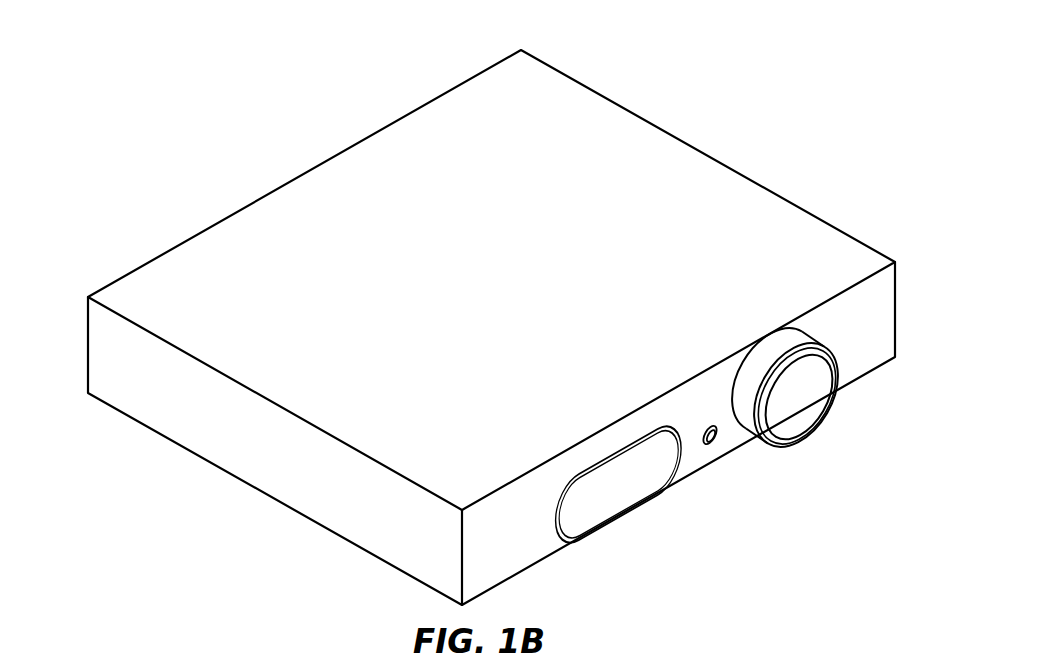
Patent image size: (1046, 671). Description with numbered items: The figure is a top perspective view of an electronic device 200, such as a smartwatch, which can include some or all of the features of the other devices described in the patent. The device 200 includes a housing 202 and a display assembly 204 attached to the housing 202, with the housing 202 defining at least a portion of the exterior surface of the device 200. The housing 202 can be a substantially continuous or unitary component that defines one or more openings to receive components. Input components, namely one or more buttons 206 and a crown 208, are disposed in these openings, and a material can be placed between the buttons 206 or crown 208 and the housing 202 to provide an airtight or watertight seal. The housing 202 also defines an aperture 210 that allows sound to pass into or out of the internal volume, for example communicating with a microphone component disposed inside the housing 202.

The device 200 is at (103, 100).
The housing 202 is at (888, 300).
The display assembly 204 is at (656, 125).
The buttons 206 is at (613, 510).
The crown 208 is at (780, 452).
The aperture 210 is at (713, 446).